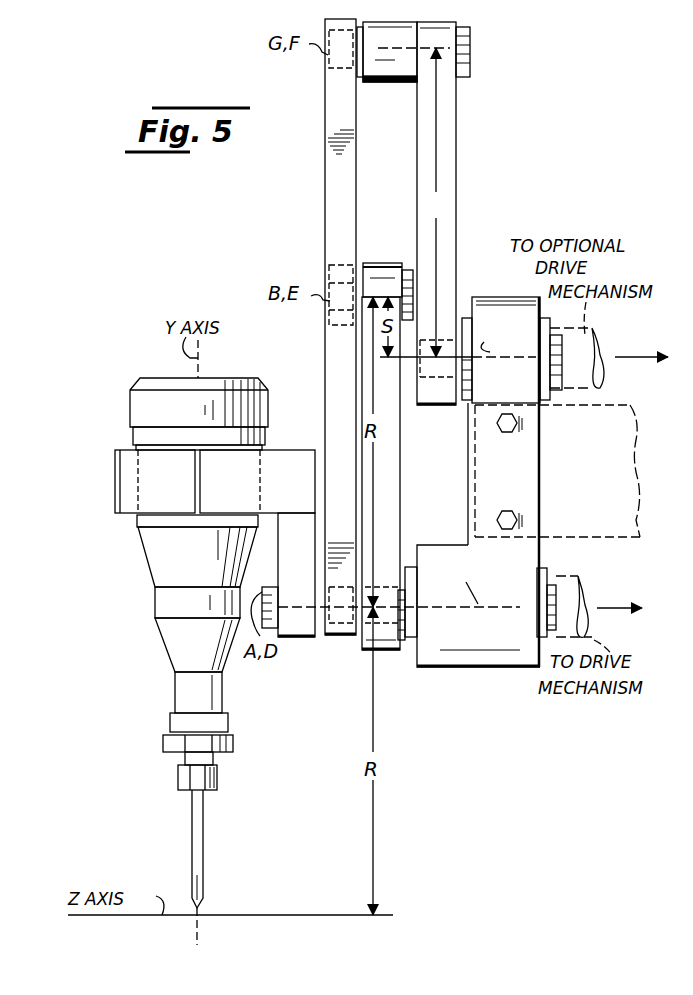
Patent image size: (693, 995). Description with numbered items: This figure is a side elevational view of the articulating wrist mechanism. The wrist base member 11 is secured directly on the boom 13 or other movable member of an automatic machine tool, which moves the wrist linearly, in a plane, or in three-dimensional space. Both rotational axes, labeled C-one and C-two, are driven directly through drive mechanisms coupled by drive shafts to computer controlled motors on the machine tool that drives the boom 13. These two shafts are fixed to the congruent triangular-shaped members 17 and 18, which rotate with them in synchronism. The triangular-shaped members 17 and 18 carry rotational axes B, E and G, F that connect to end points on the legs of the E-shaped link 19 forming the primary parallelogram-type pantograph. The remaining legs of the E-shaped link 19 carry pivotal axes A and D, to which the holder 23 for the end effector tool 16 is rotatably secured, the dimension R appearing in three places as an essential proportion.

The wrist base member 11 is at (440, 668).
The boom 13 is at (578, 527).
The end effector tool 16 is at (157, 565).
The triangular-shaped member 17 is at (397, 469).
The triangular-shaped member 18 is at (452, 125).
The E-shaped link 19 is at (328, 196).
The holder 23 is at (118, 478).